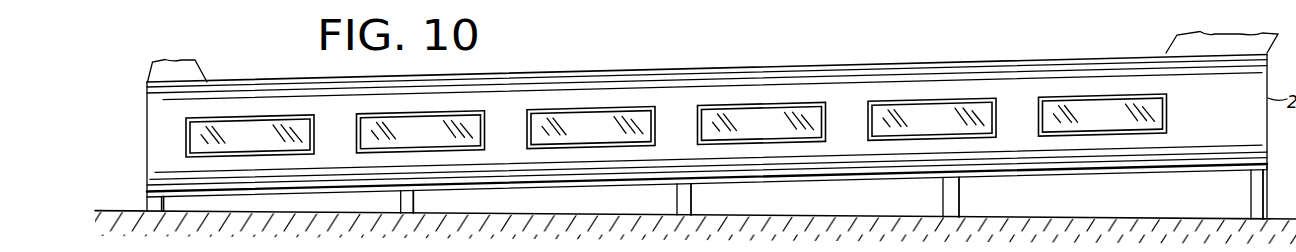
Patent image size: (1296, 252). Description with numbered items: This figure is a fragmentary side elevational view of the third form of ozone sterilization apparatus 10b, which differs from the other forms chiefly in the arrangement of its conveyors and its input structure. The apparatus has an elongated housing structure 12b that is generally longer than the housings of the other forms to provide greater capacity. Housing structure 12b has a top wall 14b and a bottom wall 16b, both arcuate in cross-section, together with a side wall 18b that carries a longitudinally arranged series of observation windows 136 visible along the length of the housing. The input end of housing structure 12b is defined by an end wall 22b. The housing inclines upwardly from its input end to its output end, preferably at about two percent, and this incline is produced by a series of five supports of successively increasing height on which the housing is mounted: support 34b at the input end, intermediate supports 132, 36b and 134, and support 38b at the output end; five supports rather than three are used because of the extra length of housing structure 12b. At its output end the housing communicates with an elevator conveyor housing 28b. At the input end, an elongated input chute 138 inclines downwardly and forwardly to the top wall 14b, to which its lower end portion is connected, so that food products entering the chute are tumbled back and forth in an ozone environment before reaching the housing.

The ozone sterilization apparatus 10b is at (633, 66).
The elongated housing structure 12b is at (665, 67).
The top wall 14b is at (582, 72).
The bottom wall 16b is at (845, 180).
The side wall 18b is at (500, 123).
The end wall 22b is at (147, 138).
The elevator conveyor housing 28b is at (1166, 45).
The support 34b is at (160, 203).
The intermediate support 36b is at (690, 198).
The support 38b is at (1252, 193).
The intermediate support 132 is at (413, 200).
The intermediate support 134 is at (958, 195).
The observation windows 136 is at (888, 110).
The input chute 138 is at (209, 64).